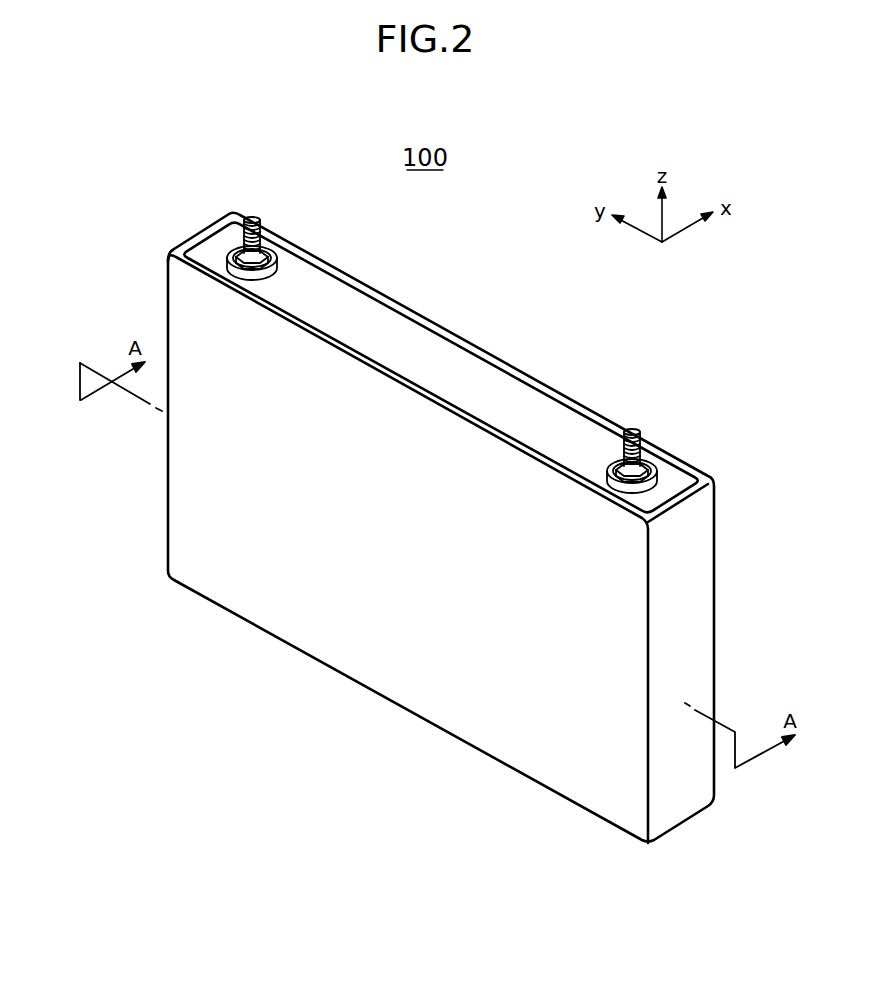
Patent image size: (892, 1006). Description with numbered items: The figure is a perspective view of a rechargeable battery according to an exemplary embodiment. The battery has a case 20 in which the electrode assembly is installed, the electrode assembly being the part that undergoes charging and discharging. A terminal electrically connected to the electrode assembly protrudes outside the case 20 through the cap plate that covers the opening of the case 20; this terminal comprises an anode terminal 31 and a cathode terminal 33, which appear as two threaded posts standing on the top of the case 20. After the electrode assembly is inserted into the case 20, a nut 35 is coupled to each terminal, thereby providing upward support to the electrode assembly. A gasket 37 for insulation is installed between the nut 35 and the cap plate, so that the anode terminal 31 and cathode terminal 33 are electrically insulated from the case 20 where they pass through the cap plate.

The case 20 is at (400, 682).
The anode terminal 31 is at (254, 217).
The cathode terminal 33 is at (633, 429).
The nut 35 is at (265, 250).
The gasket 37 is at (276, 253).